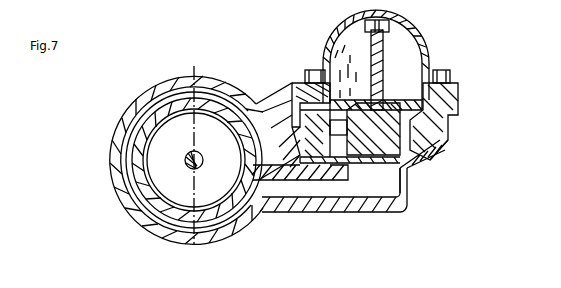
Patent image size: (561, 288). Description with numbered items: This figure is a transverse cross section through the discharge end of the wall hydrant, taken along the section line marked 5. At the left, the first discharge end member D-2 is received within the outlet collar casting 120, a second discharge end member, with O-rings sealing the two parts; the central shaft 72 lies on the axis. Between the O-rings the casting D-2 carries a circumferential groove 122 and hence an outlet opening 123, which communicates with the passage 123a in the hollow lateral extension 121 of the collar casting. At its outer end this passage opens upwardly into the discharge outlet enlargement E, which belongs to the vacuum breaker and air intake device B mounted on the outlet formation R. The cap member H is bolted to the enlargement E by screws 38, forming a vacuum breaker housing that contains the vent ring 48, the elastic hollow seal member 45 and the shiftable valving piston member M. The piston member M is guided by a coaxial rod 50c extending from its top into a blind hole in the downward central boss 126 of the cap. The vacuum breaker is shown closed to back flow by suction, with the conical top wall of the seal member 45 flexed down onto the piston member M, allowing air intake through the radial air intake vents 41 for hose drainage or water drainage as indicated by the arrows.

The section line 5- 5 is at (189, 62).
The outlet collar casting 120 is at (148, 88).
The first discharge end member D-2 is at (133, 128).
The circumferential groove 122 is at (238, 103).
The outlet opening 123 is at (242, 201).
The passage 123a is at (330, 196).
The shaft 72 is at (184, 160).
The vent ring 48 is at (292, 103).
The screws 38 is at (305, 68).
The cap member H is at (421, 36).
The downward central boss 126 is at (335, 34).
The coaxial rod 50c is at (408, 63).
The valving piston member M is at (370, 164).
The air intake vents 41 is at (468, 138).
The vacuum breaker and air intake device B is at (479, 75).
The elastomeric hollow element 45 is at (444, 135).
The enlargement E is at (437, 171).
The hollow lateral extension 121 is at (309, 212).
The outlet formation R is at (416, 193).